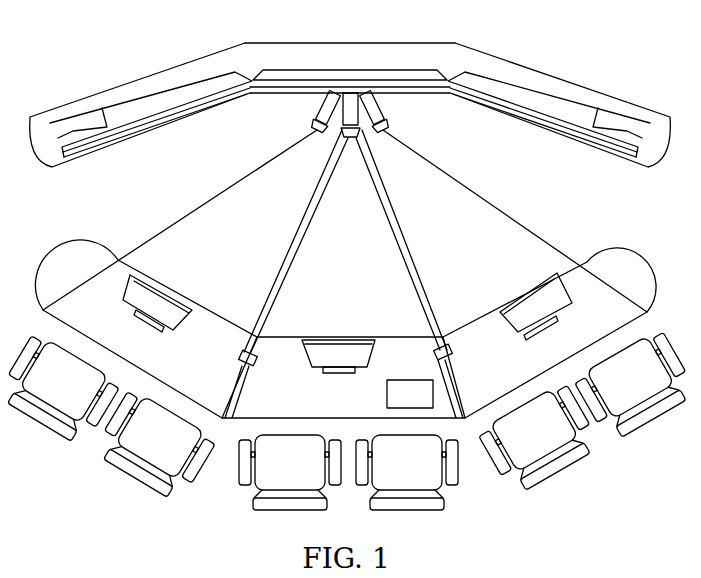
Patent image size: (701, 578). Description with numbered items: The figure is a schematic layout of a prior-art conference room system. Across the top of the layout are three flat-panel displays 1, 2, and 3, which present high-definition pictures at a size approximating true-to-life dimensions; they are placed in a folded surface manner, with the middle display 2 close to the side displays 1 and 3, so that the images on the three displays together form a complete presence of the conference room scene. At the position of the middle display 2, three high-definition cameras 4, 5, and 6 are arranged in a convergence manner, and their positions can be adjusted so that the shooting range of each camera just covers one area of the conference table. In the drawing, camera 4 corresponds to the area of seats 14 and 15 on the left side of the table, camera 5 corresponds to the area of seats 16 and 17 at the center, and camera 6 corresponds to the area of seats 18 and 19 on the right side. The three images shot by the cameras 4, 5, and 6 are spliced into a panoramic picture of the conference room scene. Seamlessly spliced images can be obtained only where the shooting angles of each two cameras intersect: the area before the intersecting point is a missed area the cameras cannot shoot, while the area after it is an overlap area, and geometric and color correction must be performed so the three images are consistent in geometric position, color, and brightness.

The flat-panel display 1 is at (143, 105).
The flat-panel display 2 is at (358, 70).
The flat-panel display 3 is at (558, 107).
The high-definition camera 4 is at (320, 110).
The high-definition camera 5 is at (351, 140).
The high-definition camera 6 is at (382, 110).
The seat 14 is at (61, 390).
The seat 15 is at (155, 446).
The seat 16 is at (290, 472).
The seat 17 is at (407, 472).
The seat 18 is at (539, 439).
The seat 19 is at (635, 386).